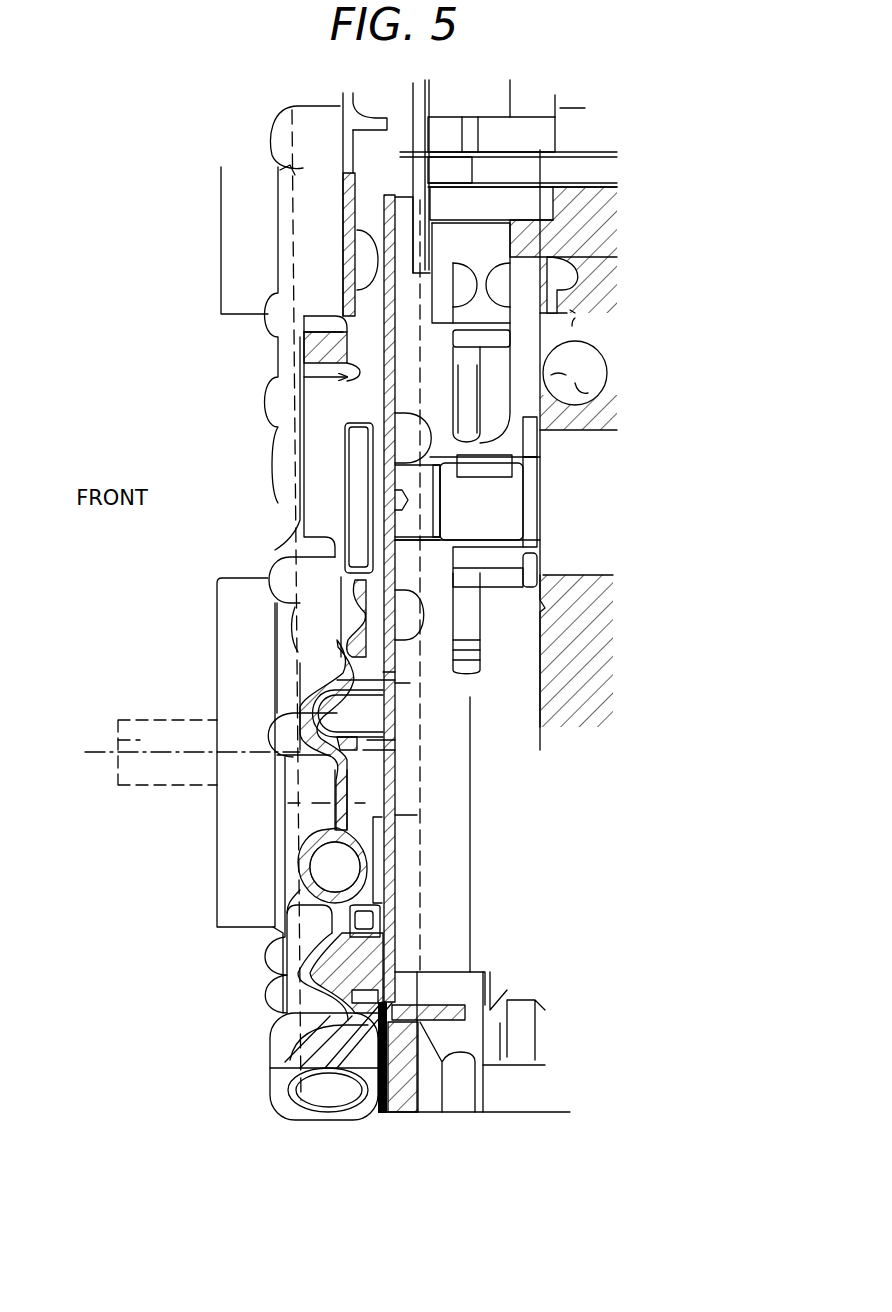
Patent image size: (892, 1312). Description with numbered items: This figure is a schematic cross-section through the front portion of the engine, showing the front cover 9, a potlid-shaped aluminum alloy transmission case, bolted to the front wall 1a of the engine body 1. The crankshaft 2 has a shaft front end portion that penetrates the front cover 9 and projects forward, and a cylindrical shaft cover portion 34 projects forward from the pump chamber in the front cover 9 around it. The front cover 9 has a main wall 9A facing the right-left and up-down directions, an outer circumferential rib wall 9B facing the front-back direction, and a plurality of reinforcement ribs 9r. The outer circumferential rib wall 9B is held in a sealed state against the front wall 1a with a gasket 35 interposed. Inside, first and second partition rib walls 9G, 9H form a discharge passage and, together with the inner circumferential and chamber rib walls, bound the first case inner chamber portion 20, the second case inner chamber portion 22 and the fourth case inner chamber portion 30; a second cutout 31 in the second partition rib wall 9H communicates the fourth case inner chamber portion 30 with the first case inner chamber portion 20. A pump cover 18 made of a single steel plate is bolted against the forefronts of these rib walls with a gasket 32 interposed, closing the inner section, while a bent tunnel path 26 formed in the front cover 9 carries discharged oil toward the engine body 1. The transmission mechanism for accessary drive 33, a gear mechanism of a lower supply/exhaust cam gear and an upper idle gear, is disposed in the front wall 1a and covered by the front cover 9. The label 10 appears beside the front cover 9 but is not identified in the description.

The engine body 1 is at (477, 1117).
The front wall 1a is at (391, 1113).
The crankshaft 2 is at (162, 720).
The front cover 9 is at (263, 1047).
The cover plate 10 is at (404, 235).
The main wall 9A is at (345, 250).
The reinforcement ribs 9r is at (345, 303).
The first partition rib wall 9G is at (483, 697).
The second partition rib wall 9H is at (393, 790).
The outer circumferential rib wall 9B is at (418, 1022).
The pump cover 18 is at (395, 937).
The first case inner chamber portion 20 is at (372, 707).
The second case inner chamber portion 22 is at (375, 240).
The bent tunnel path 26 is at (298, 850).
The fourth case inner chamber portion 30 is at (372, 815).
The second cutout 31 is at (393, 760).
The gasket 32 is at (325, 932).
The transmission mechanism for accessary drive 33 is at (527, 278).
The cylindrical shaft cover portion 34 is at (233, 640).
The gasket 35 is at (288, 1017).